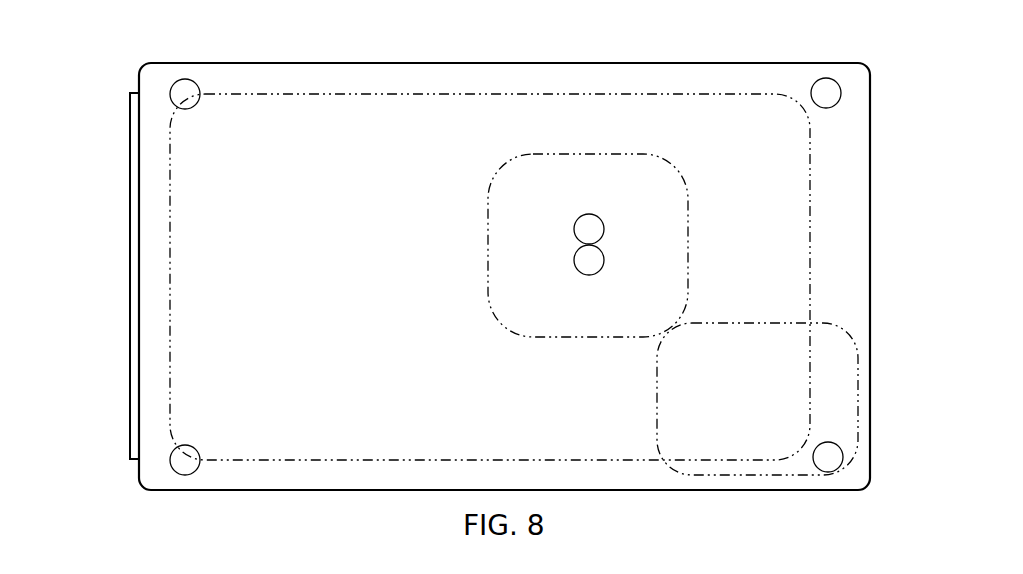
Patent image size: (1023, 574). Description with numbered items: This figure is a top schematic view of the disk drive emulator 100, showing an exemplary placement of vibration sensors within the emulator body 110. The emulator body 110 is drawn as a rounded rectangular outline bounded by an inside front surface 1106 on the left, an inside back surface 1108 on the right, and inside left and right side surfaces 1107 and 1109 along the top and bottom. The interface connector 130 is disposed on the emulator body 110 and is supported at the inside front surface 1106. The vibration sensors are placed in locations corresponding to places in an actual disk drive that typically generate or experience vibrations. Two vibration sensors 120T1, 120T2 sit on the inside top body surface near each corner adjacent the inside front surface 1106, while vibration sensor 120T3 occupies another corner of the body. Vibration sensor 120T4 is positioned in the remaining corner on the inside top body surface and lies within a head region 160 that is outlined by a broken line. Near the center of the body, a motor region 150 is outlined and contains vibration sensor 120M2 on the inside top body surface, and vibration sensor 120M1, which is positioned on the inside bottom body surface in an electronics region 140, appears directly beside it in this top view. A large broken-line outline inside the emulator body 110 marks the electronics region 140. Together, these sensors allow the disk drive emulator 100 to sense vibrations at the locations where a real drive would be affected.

The disk drive emulator 100 is at (100, 60).
The emulator body 110 is at (872, 183).
The interface connector 130 is at (130, 270).
The electronics region 140 is at (400, 93).
The motor region 150 is at (690, 238).
The head region 160 is at (857, 395).
The inside front surface 1106 is at (143, 258).
The inside left side surface 1107 is at (358, 66).
The inside back surface 1108 is at (866, 162).
The inside right side surface 1109 is at (460, 488).
The vibration sensor 120T1 is at (187, 79).
The vibration sensor 120T2 is at (197, 452).
The vibration sensor 120T3 is at (828, 78).
The vibration sensor 120T4 is at (843, 458).
The vibration sensor 120M1 is at (596, 273).
The vibration sensor 120M2 is at (594, 216).